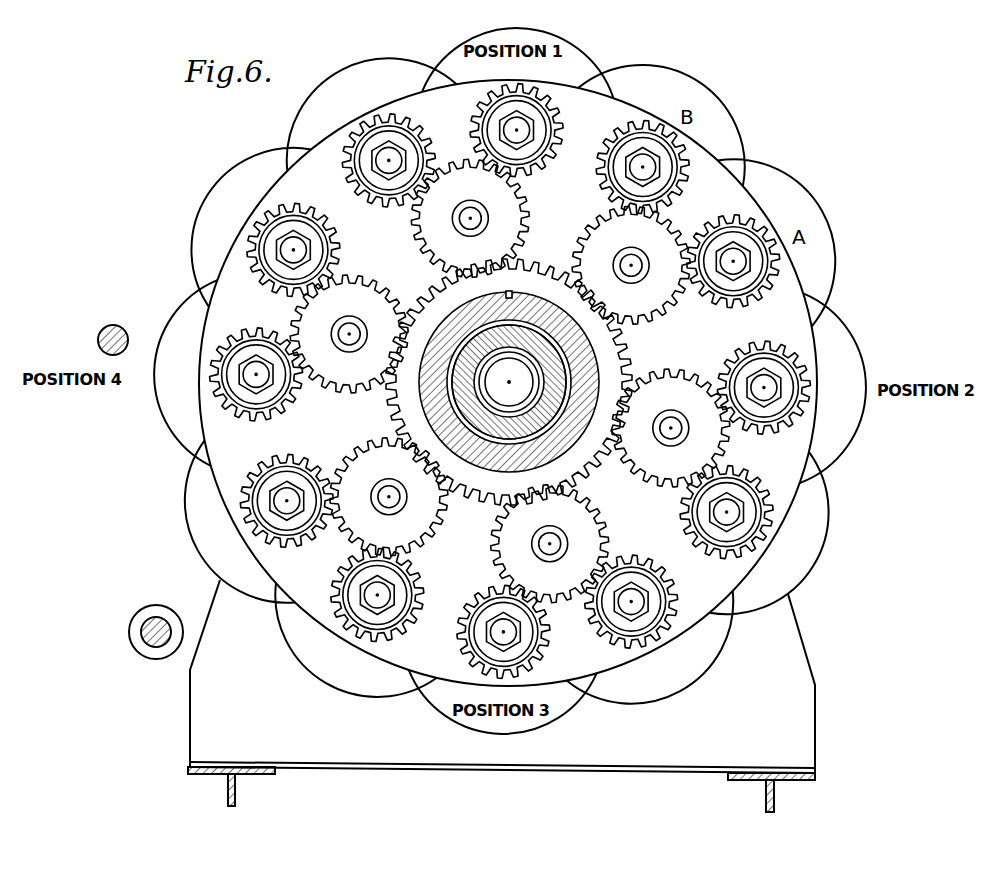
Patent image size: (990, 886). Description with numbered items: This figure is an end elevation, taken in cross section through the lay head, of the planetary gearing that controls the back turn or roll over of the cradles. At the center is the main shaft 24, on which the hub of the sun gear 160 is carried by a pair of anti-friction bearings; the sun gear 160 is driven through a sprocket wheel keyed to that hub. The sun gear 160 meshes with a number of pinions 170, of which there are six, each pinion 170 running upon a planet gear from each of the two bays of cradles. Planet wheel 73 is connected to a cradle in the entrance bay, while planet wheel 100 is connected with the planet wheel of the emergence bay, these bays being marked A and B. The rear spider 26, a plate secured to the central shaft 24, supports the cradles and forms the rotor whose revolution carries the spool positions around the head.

The rear spider 26 is at (862, 456).
The planet wheel 100 is at (681, 188).
The planet wheel 73 is at (758, 294).
The pinion 170 is at (631, 265).
The sun gear 160 is at (604, 363).
The central shaft 24 is at (501, 434).